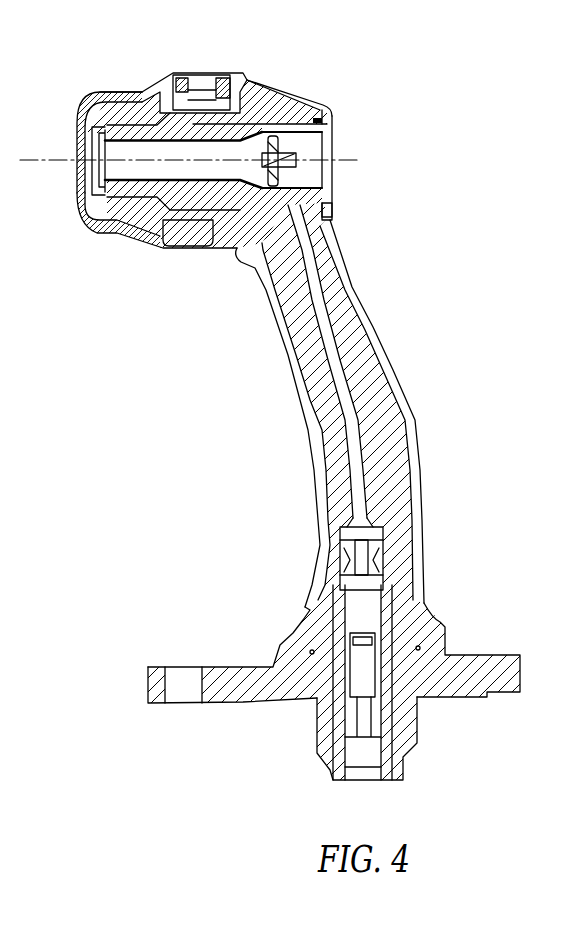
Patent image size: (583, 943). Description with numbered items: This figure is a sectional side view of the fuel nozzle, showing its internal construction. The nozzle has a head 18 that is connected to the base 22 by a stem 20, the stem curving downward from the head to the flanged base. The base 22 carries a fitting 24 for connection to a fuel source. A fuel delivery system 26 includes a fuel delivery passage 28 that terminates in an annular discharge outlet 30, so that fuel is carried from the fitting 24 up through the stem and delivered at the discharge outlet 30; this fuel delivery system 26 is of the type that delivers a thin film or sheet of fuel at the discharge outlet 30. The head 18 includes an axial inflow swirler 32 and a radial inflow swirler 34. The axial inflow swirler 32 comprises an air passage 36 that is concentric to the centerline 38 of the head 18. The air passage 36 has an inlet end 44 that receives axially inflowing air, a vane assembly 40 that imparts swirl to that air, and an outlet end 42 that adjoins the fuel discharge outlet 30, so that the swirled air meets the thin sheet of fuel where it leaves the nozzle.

The head 18 is at (160, 75).
The stem 20 is at (397, 378).
The base 22 is at (522, 660).
The fitting 24 is at (417, 723).
The fuel delivery system 26 is at (377, 527).
The fuel delivery passage 28 is at (157, 222).
The annular discharge outlet 30 is at (88, 142).
The axial inflow swirler 32 is at (340, 132).
The radial inflow swirler 34 is at (119, 86).
The air passage 36 is at (95, 193).
The centerline 38 is at (348, 158).
The vane assembly 40 is at (298, 164).
The outlet end 42 is at (137, 170).
The inlet end 44 is at (338, 188).